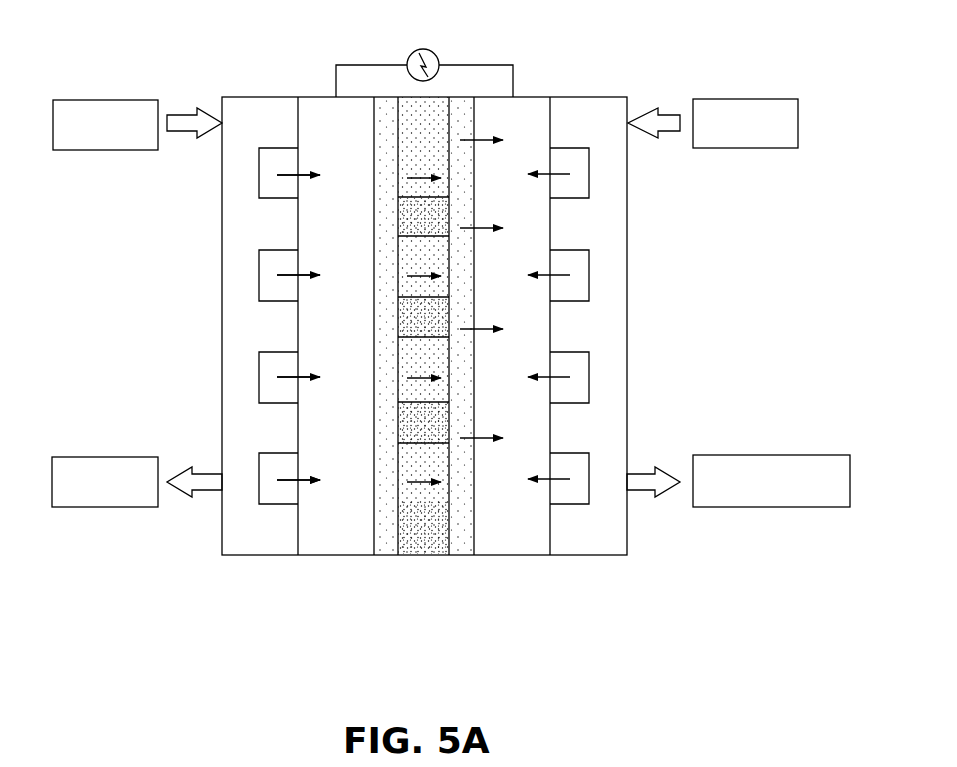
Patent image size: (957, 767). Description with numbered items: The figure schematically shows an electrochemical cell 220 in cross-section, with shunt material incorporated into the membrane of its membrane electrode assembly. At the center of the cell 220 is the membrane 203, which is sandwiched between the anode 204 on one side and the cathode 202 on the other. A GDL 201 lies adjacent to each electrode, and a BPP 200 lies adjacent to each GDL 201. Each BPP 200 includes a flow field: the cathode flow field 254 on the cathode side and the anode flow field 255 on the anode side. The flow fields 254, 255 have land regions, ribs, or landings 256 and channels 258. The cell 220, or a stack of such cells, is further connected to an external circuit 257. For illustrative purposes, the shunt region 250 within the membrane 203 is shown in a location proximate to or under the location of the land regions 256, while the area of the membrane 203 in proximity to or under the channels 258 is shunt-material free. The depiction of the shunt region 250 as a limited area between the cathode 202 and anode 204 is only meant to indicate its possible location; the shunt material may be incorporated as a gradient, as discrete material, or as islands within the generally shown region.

The BPP 200 is at (225, 345).
The GDL 201 is at (324, 117).
The cathode 202 is at (468, 556).
The membrane 203 is at (431, 531).
The anode 204 is at (387, 549).
The electrochemical cell 220 is at (126, 267).
The shunt material region 250 is at (398, 218).
The cathode flow field 254 is at (572, 583).
The anode flow field 255 is at (296, 558).
The land regions 256 is at (296, 234).
The external circuit 257 is at (472, 62).
The channels 258 is at (260, 377).